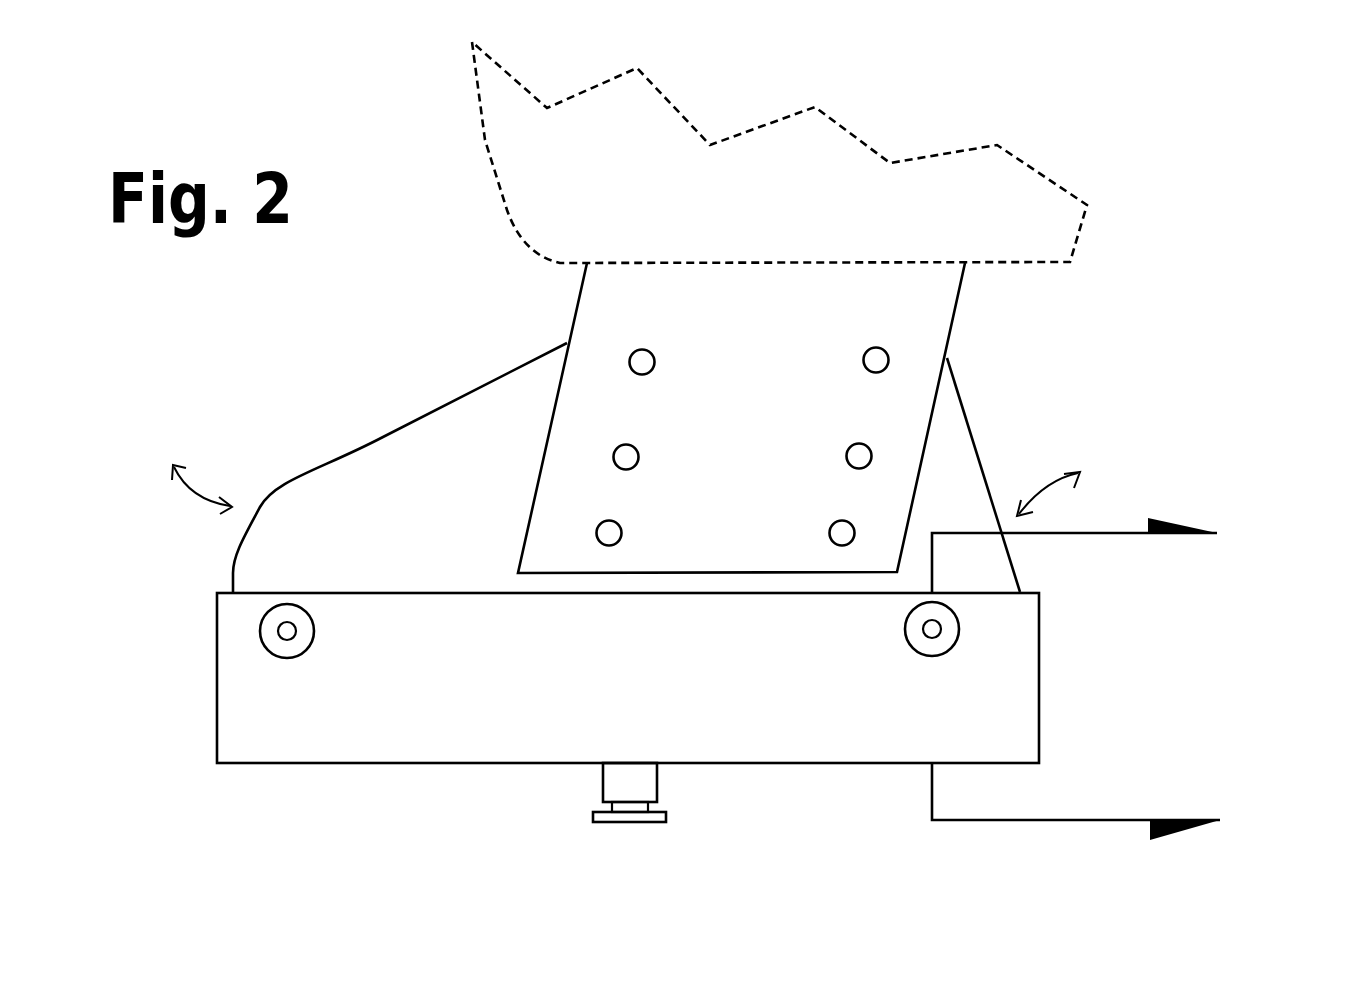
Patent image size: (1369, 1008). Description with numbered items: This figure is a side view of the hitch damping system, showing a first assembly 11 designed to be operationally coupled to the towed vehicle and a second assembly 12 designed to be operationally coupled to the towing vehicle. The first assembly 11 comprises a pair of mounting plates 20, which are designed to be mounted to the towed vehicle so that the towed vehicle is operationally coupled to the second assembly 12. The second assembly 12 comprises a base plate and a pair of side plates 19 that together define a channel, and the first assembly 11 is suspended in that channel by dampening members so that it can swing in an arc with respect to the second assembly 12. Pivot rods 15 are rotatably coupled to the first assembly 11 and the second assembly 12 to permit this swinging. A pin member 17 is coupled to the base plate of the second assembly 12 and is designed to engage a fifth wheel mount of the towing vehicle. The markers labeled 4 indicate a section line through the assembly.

The first assembly 11 is at (983, 381).
The mounting plates 20 is at (955, 472).
The section line 4- 4 is at (1098, 677).
The pivot rods 15 is at (278, 629).
The side plates 19 is at (1003, 713).
The pin member 17 is at (637, 784).
The second assembly 12 is at (682, 729).